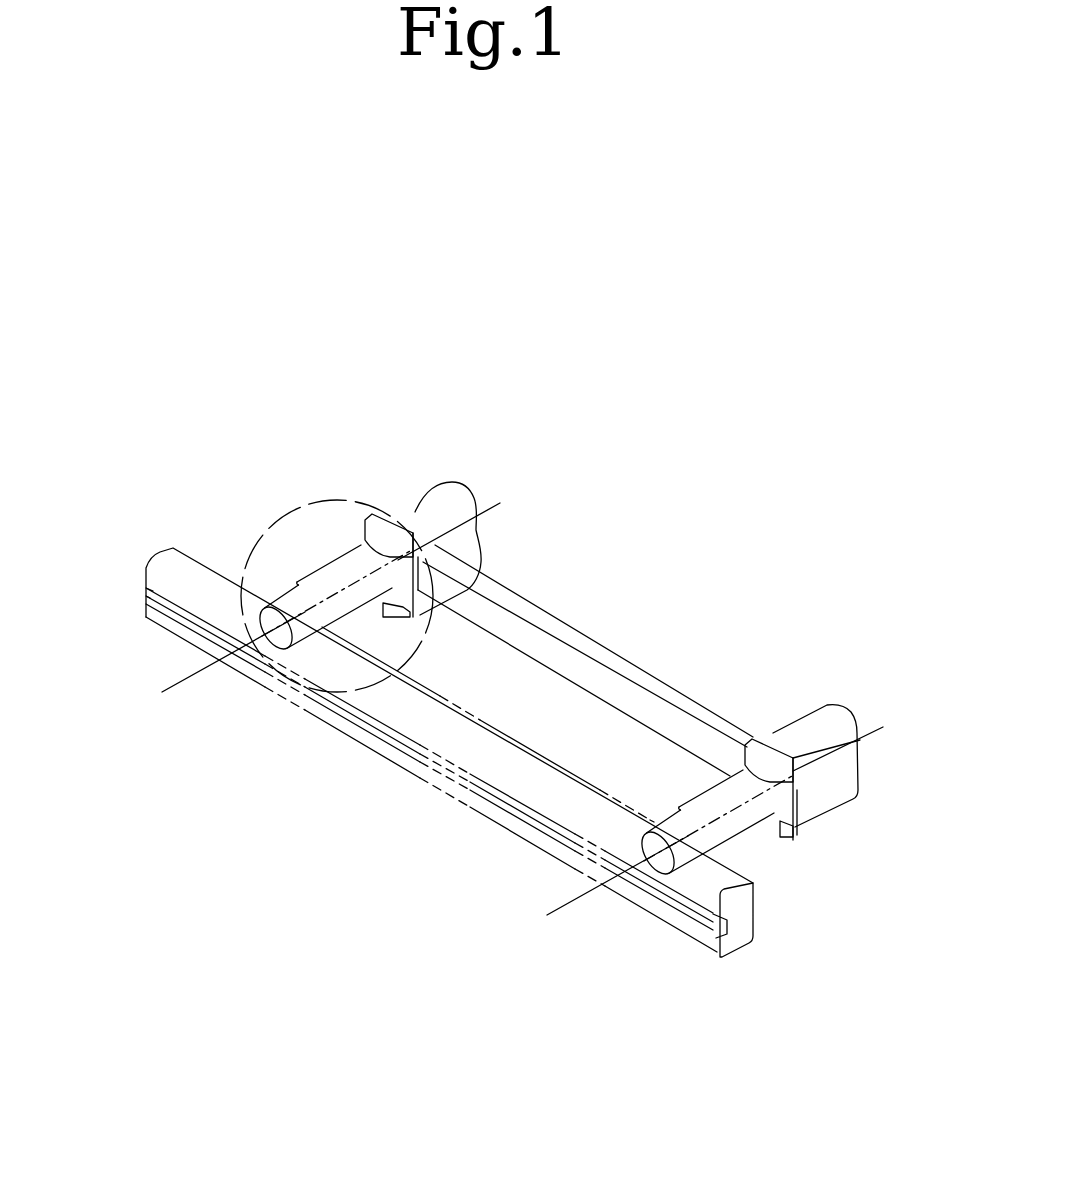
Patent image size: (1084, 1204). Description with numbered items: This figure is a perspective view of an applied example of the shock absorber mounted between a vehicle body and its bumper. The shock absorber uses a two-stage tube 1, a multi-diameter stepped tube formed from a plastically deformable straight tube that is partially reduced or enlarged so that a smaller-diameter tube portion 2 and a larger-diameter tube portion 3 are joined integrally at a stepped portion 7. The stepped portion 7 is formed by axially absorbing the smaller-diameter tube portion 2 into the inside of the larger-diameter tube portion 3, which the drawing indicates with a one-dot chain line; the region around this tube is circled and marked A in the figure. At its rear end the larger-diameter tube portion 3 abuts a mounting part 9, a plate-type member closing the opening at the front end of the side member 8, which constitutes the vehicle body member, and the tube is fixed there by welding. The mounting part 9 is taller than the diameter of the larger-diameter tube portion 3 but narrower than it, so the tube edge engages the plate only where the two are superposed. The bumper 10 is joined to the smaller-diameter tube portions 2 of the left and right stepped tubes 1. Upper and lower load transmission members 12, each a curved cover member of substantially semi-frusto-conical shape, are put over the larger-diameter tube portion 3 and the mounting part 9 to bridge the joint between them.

The two-stage tube 1 is at (353, 430).
The smaller-diameter tube portion 2 is at (288, 602).
The larger-diameter tube portion 3 is at (345, 563).
The stepped portion 7 is at (337, 625).
The side member 8 is at (447, 500).
The mounting part 9 is at (418, 520).
The bumper 10 is at (350, 737).
The load transmission member 12 is at (386, 533).
The detail region A is at (230, 551).